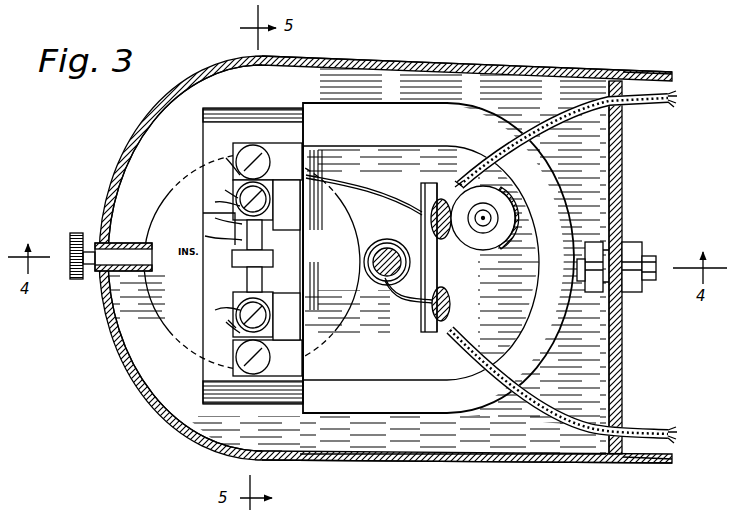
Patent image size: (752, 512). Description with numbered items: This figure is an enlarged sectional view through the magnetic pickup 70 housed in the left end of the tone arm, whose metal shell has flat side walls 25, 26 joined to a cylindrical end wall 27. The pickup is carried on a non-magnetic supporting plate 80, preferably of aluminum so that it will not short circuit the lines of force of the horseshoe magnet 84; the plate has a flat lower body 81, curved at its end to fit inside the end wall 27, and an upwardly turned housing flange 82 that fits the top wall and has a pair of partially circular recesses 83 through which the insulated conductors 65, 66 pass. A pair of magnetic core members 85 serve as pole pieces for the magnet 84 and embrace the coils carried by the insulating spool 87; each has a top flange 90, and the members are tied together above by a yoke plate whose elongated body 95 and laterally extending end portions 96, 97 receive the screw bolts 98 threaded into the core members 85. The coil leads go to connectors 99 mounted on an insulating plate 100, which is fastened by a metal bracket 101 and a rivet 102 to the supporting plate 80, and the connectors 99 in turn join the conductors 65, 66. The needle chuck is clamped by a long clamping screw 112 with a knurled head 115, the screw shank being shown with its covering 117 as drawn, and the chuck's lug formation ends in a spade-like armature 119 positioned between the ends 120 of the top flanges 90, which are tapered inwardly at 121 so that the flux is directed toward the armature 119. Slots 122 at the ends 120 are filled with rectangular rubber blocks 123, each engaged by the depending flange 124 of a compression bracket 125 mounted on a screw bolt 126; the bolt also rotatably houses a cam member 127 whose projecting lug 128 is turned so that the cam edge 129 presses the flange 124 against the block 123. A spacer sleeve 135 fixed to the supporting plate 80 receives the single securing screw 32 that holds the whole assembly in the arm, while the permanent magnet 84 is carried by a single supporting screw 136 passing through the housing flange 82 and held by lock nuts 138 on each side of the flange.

The side wall 25 is at (582, 72).
The side wall 26 is at (539, 462).
The cylindrical end wall 27 is at (235, 278).
The screw bolt 32 is at (389, 305).
The insulated conductor 65 is at (562, 404).
The insulated conductor 66 is at (578, 115).
The pickup 70 is at (362, 416).
The supporting plate 80 is at (458, 446).
The lower body 81 is at (613, 330).
The housing flange 82 is at (624, 356).
The partially circular recess 83 is at (640, 83).
The horseshoe magnet 84 is at (428, 404).
The magnetic core member 85 is at (298, 130).
The spool 87 is at (222, 294).
The top flange 90 is at (235, 286).
The elongated body 95 is at (288, 247).
The end portion 96 is at (265, 158).
The end portion 97 is at (233, 376).
The screw bolt 98 is at (246, 147).
The connector 99 is at (441, 236).
The insulating plate 100 is at (427, 247).
The metal bracket 101 is at (494, 250).
The rivet 102 is at (488, 222).
The clamping screw 112 is at (88, 264).
The knurled head 115 is at (84, 217).
The shaft 117 is at (127, 243).
The spade-like end 119 is at (274, 257).
The end of upper flange 120 is at (240, 267).
The tapered portion 121 is at (240, 276).
The slot 122 is at (274, 231).
The rubber block 123 is at (247, 240).
The depending flange 124 is at (240, 238).
The compression bracket 125 is at (238, 205).
The screw bolt 126 is at (238, 180).
The cam member 127 is at (236, 195).
The lug 128 is at (235, 165).
The cam edge 129 is at (240, 222).
The spacer sleeve 135 is at (452, 336).
The supporting screw 136 is at (648, 258).
The lock nut 138 is at (638, 243).